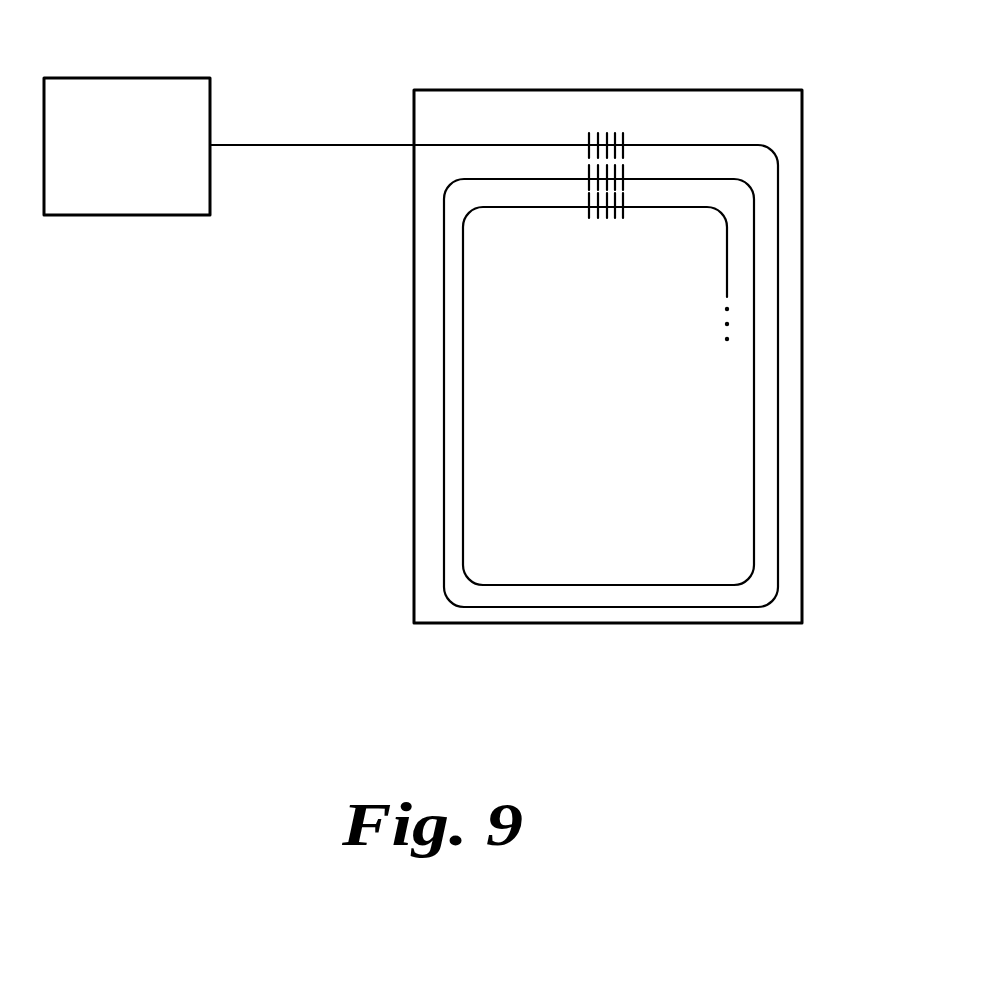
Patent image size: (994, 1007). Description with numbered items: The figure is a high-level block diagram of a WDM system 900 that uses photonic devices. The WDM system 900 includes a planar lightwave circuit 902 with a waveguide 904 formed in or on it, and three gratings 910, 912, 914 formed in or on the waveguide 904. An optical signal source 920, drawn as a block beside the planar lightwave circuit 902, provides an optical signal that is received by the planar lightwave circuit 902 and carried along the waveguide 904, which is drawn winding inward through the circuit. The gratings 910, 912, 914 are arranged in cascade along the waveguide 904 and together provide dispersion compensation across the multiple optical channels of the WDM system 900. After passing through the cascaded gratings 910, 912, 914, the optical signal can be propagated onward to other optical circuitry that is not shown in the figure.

The WDM system 900 is at (148, 538).
The planar lightwave circuit 902 is at (412, 523).
The waveguide 904 is at (474, 145).
The grating 910 is at (618, 122).
The grating 912 is at (633, 166).
The grating 914 is at (634, 199).
The optical signal source 920 is at (168, 216).